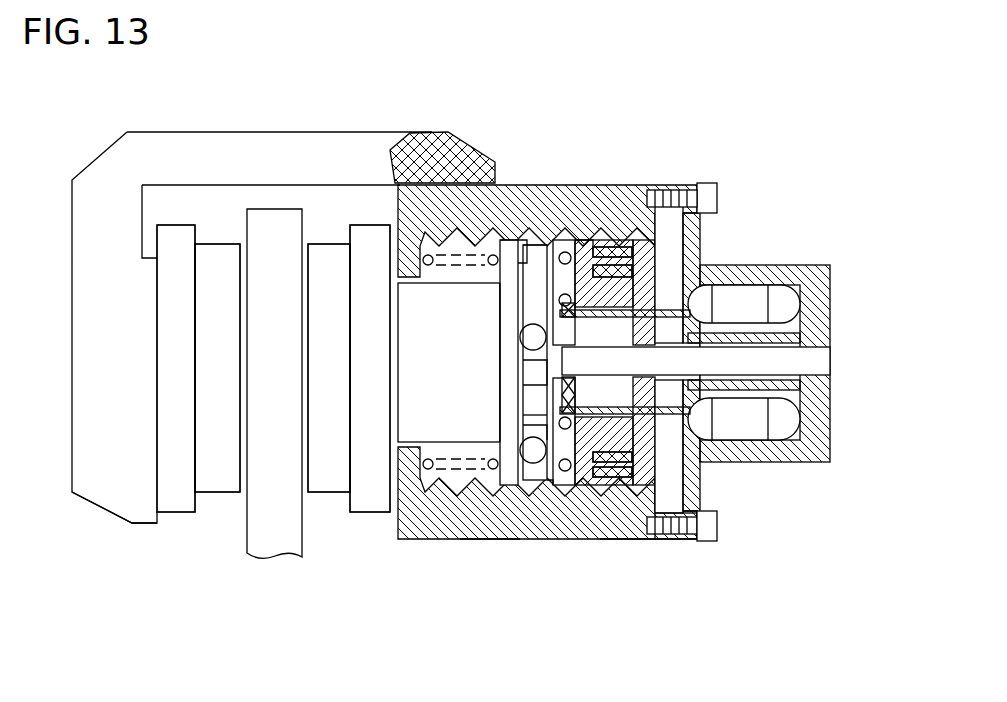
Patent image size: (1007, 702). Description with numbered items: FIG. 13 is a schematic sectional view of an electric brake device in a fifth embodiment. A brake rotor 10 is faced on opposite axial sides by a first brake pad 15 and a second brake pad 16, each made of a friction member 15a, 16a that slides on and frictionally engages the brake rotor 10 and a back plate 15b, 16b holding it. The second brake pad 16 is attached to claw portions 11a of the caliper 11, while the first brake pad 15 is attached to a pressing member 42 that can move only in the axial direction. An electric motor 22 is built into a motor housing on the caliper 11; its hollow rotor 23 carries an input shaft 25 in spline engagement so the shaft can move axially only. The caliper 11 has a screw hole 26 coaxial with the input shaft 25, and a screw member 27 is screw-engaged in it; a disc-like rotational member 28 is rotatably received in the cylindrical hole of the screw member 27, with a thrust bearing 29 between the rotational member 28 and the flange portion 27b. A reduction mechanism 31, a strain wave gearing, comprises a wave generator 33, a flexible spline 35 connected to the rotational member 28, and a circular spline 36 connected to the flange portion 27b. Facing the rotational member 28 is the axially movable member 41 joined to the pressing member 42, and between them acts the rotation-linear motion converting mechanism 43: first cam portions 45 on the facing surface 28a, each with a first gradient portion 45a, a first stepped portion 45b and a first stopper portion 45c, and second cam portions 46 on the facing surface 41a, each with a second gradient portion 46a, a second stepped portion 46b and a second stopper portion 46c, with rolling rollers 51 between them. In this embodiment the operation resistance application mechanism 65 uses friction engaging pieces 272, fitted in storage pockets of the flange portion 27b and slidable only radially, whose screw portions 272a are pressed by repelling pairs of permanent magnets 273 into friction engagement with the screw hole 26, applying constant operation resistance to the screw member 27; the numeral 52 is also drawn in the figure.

The brake rotor 10 is at (268, 223).
The caliper 11 is at (343, 150).
The claw portions 11a is at (149, 513).
The first brake pad 15 is at (337, 228).
The friction member 15a is at (327, 483).
The back plate 15b is at (370, 497).
The second brake pad 16 is at (208, 218).
The friction member 16a is at (215, 483).
The back plate 16b is at (177, 498).
The electric motor 22 is at (762, 278).
The rotor 23 is at (662, 322).
The input shaft 25 is at (835, 359).
The screw hole 26 is at (497, 520).
The screw member 27 is at (465, 525).
The flange portion 27b is at (627, 520).
The rotational member 28 is at (570, 520).
The facing surface 28a is at (603, 520).
The thrust bearing 29 is at (603, 250).
The reduction mechanism 31 is at (660, 270).
The wave generator 33 is at (648, 393).
The flexible spline 35 is at (672, 465).
The circular spline 36 is at (640, 280).
The axially movable member 41 is at (517, 490).
The facing surface 41a is at (520, 295).
The pressing member 42 is at (468, 233).
The rotation-linear motion converting mechanism 43 is at (537, 497).
The first cam portions 45 is at (548, 240).
The first gradient portion 45a is at (535, 373).
The first stepped portion 45b is at (537, 425).
The first stopper portion 45c is at (533, 430).
The second cam portions 46 is at (526, 497).
The second gradient portion 46a is at (588, 240).
The second stepped portion 46b is at (505, 245).
The second stopper portion 46c is at (531, 258).
The rolling rollers 51 is at (527, 337).
The O-ring 52 is at (433, 253).
The operation resistance application mechanism 65 is at (707, 190).
The friction engaging pieces 272 is at (630, 250).
The screw portions 272a is at (650, 523).
The permanent magnets 273 is at (652, 225).